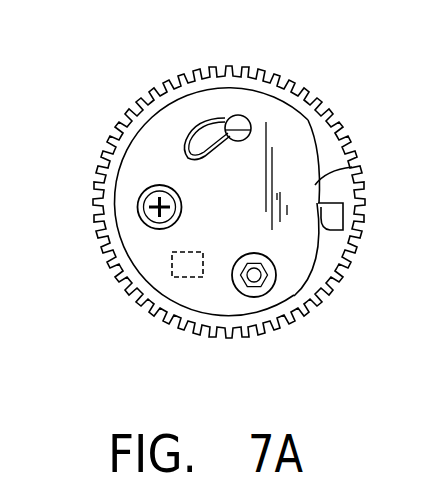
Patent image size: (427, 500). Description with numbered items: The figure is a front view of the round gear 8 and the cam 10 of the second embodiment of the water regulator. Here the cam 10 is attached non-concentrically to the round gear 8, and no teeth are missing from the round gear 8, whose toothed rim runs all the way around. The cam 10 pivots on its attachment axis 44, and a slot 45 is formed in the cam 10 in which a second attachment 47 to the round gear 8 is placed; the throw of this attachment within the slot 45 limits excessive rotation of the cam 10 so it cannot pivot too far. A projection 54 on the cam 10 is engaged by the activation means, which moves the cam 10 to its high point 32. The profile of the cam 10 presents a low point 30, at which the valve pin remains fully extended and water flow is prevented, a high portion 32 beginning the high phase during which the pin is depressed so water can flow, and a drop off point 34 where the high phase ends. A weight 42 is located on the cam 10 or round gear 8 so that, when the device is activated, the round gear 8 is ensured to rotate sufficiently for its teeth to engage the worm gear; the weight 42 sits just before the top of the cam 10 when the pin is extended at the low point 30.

The round gear 8 is at (127, 284).
The cam 10 is at (147, 143).
The low point 30 is at (352, 167).
The high portion 32 is at (300, 148).
The drop off point 34 is at (343, 230).
The weight 42 is at (178, 277).
The attachment axis 44 is at (137, 207).
The slot 45 is at (212, 133).
The second attachment 47 is at (237, 116).
The projection 54 is at (258, 297).